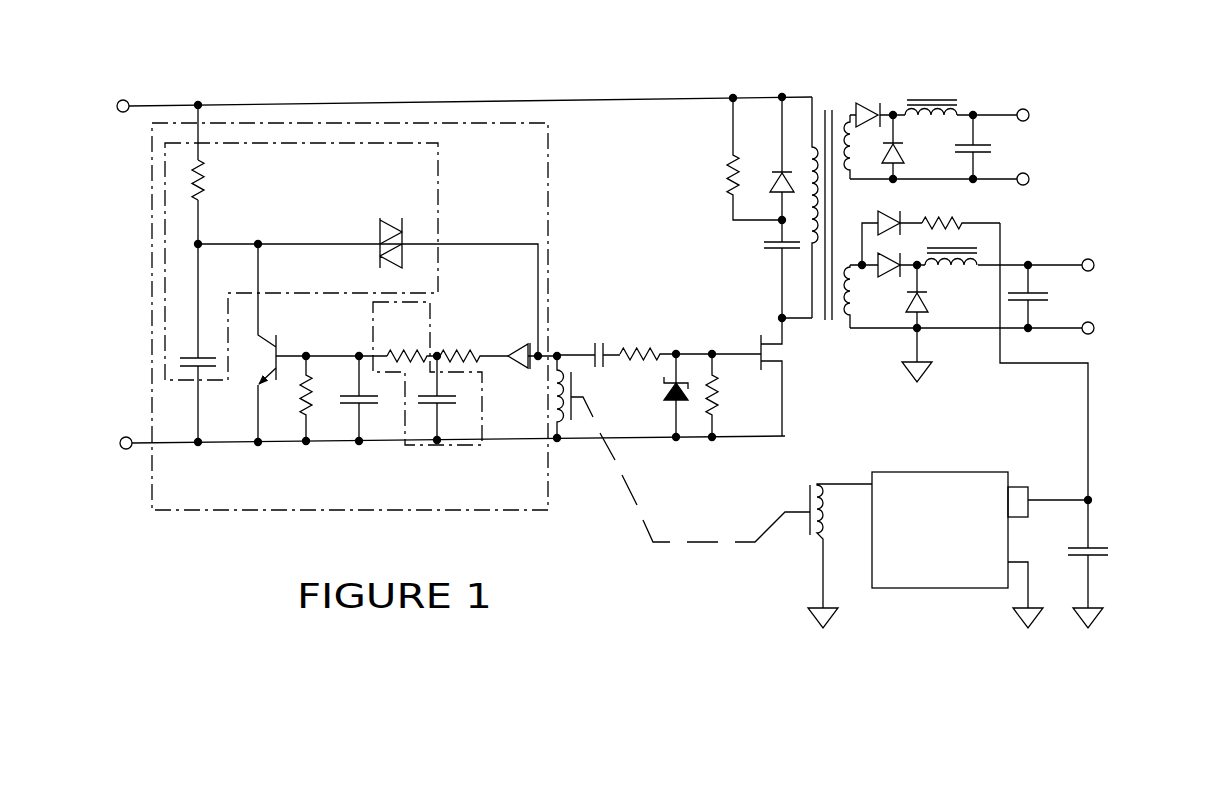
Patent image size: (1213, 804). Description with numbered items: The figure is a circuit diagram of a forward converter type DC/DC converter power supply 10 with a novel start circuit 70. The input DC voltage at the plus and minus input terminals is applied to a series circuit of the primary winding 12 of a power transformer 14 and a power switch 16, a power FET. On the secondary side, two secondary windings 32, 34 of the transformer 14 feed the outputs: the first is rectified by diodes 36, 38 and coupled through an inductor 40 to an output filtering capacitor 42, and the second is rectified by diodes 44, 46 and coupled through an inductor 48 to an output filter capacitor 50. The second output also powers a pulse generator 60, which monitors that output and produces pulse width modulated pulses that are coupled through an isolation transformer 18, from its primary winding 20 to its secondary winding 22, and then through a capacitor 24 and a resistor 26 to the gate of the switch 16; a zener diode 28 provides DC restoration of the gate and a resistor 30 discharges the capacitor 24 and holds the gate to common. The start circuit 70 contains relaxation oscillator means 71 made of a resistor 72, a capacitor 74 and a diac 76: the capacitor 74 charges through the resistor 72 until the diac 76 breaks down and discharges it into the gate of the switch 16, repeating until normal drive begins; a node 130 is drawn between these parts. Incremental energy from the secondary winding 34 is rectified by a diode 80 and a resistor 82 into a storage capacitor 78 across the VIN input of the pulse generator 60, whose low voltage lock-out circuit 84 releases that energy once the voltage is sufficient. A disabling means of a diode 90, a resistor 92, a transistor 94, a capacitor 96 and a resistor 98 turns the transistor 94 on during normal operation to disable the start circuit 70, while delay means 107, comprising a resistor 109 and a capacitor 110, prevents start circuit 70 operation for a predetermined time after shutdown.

The DC/DC converter power supply 10 is at (398, 64).
The primary winding 12 is at (810, 155).
The power transformer 14 is at (828, 110).
The power switch 16 is at (757, 334).
The isolation transformer 18 is at (804, 493).
The primary winding 20 is at (822, 538).
The secondary winding 22 is at (553, 383).
The capacitor 24 is at (598, 338).
The resistor 26 is at (650, 345).
The zener diode 28 is at (667, 398).
The resistor 30 is at (728, 390).
The secondary winding 32 is at (848, 110).
The secondary winding 34 is at (850, 263).
The diode 36 is at (863, 107).
The diode 38 is at (901, 157).
The inductor 40 is at (934, 97).
The output filtering capacitor 42 is at (955, 143).
The diode 44 is at (886, 273).
The diode 46 is at (908, 307).
The inductor 48 is at (963, 272).
The output filter capacitor 50 is at (1027, 292).
The pulse generator 60 is at (962, 572).
The start circuit 70 is at (354, 307).
The relaxation oscillator means 71 is at (441, 209).
The resistor 72 is at (208, 186).
The capacitor 74 is at (181, 355).
The diac 76 is at (385, 225).
The capacitor 78 is at (1108, 541).
The diode 80 is at (891, 216).
The resistor 82 is at (953, 223).
The low voltage lock-out circuit 84 is at (1018, 486).
The diode 90 is at (526, 342).
The resistor 92 is at (457, 345).
The transistor 94 is at (279, 344).
The capacitor 96 is at (365, 407).
The resistor 98 is at (311, 392).
The delay means 107 is at (480, 451).
The resistor 109 is at (409, 344).
The capacitor 110 is at (447, 407).
The circuit node 130 is at (199, 243).